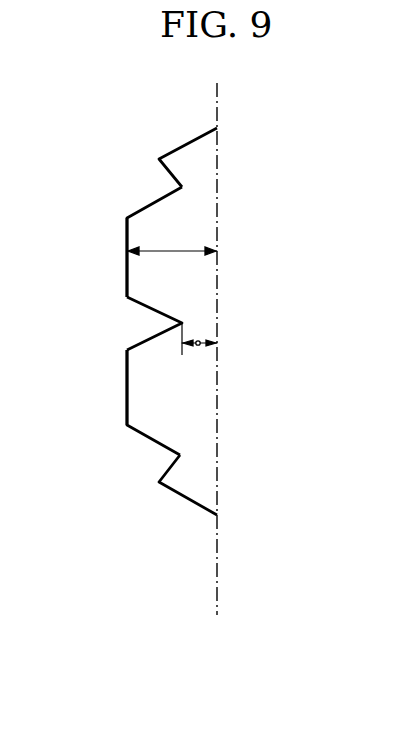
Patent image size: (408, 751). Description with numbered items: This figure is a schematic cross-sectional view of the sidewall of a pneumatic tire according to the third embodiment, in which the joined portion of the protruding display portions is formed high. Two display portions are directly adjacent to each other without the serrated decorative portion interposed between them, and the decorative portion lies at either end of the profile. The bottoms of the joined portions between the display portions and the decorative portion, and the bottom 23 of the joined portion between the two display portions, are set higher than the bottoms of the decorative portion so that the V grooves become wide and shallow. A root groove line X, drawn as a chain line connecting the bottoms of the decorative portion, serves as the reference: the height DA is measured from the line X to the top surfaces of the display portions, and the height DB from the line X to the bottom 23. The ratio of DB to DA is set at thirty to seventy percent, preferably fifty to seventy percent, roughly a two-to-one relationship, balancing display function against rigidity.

The root groove line X is at (219, 93).
The bottom of joined portion of display portions 23 is at (182, 322).
The height to top surfaces of display portions DA is at (172, 238).
The height of bottom of joined portion DB is at (199, 345).